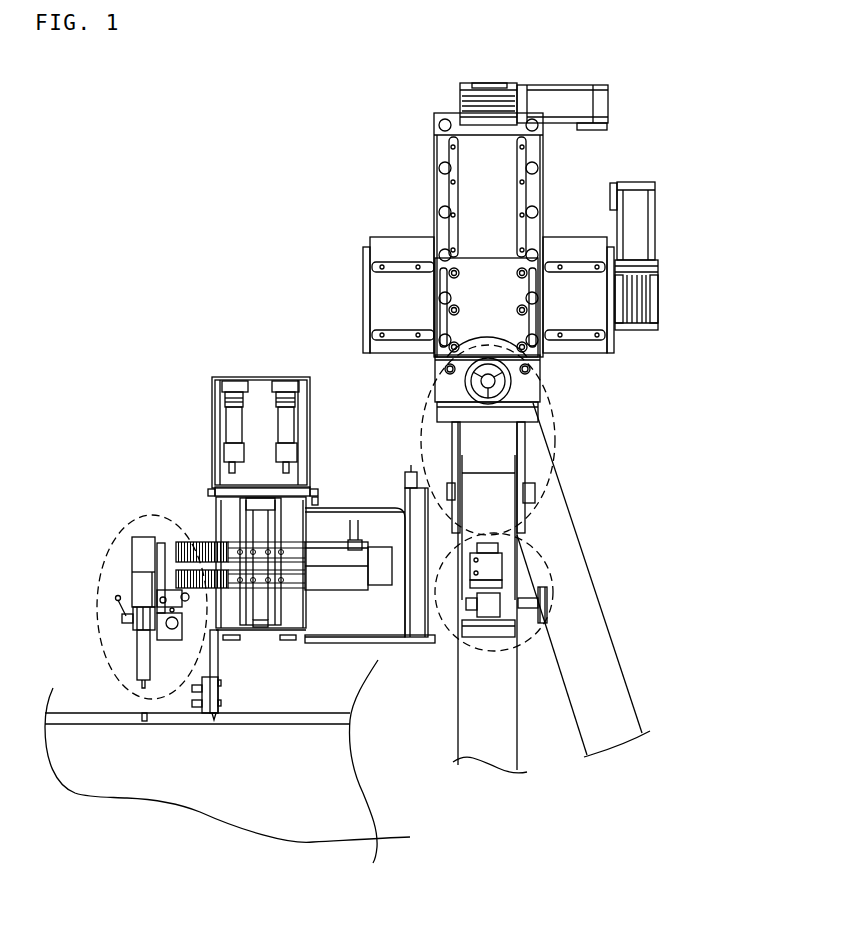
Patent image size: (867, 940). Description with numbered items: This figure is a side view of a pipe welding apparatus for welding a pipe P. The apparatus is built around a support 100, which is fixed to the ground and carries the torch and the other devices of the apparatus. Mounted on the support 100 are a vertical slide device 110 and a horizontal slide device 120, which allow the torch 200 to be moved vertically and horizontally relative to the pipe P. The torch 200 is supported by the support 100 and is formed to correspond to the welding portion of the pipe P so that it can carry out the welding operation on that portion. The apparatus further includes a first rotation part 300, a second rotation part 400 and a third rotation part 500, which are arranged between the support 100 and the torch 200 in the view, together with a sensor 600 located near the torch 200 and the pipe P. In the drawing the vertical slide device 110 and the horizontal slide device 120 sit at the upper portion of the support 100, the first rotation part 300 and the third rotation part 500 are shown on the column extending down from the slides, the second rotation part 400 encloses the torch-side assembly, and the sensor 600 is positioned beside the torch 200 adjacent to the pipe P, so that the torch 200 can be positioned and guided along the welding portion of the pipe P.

The support 100 is at (513, 720).
The vertical slide device 110 is at (502, 162).
The horizontal slide device 120 is at (597, 303).
The torch 200 is at (132, 555).
The first rotation part 300 is at (553, 432).
The second rotation part 400 is at (143, 513).
The third rotation part 500 is at (537, 548).
The sensor 600 is at (217, 663).
The pipe P is at (178, 722).